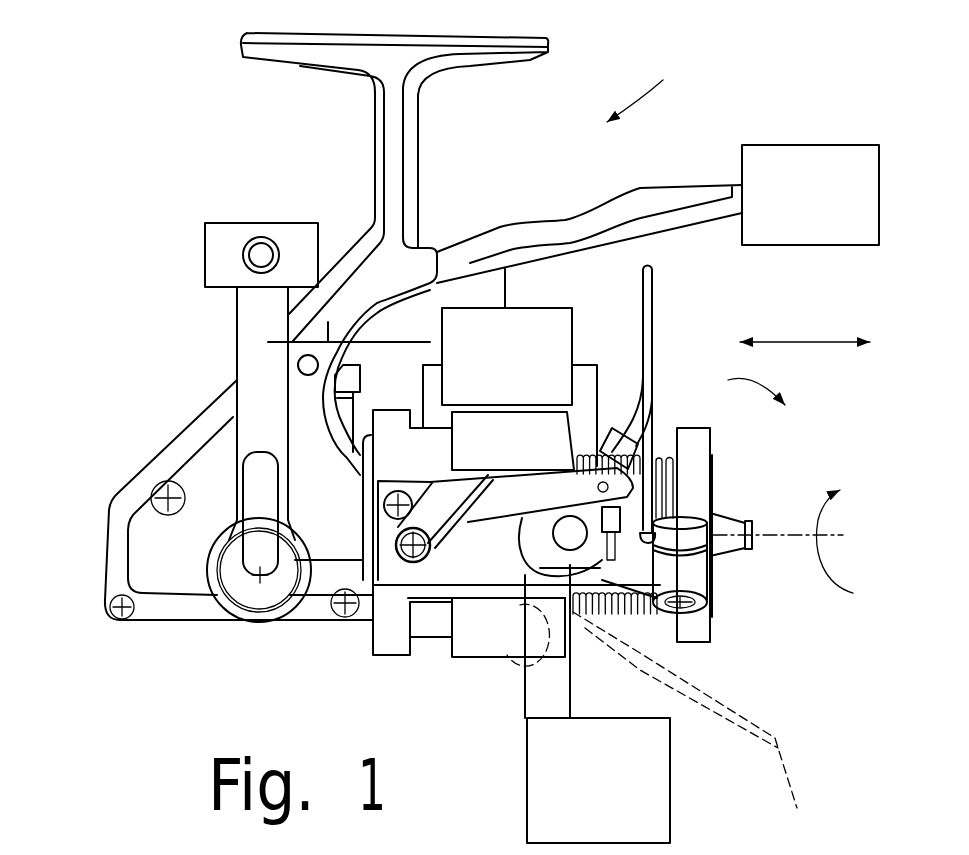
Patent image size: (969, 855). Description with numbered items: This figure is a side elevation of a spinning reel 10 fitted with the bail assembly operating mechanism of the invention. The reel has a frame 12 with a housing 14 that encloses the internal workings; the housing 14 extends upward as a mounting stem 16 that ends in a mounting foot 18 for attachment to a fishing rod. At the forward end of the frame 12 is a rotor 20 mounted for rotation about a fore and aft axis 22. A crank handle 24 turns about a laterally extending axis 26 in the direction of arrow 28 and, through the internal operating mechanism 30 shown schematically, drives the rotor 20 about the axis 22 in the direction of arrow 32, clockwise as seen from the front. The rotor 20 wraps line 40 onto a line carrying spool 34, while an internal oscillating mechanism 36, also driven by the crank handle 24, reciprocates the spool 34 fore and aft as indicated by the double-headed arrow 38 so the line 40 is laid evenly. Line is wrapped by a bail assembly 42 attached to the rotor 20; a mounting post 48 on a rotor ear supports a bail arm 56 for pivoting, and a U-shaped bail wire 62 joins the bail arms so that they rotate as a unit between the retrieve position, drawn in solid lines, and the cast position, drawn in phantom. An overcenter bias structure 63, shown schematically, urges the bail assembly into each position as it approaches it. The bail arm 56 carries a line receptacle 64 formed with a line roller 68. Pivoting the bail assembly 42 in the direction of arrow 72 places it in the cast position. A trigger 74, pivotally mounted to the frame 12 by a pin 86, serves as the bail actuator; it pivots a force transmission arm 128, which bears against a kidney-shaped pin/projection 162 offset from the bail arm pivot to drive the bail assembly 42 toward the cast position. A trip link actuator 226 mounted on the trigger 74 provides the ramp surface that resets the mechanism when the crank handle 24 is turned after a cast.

The spinning reel 10 is at (656, 77).
The frame 12 is at (182, 437).
The housing 14 is at (170, 622).
The mounting stem 16 is at (400, 200).
The mounting foot 18 is at (411, 68).
The rotor 20 is at (432, 640).
The fore and aft axis 22 is at (773, 533).
The crank handle 24 is at (247, 328).
The laterally extending axis 26 is at (260, 572).
The arrow 28 is at (312, 465).
The internal operating mechanism 30 is at (520, 399).
The arrow 32 is at (826, 575).
The line carrying spool 34 is at (477, 645).
The internal oscillating mechanism 36 is at (823, 237).
The double-headed arrow 38 is at (803, 340).
The line 40 is at (655, 455).
The bail assembly 42 is at (657, 323).
The mounting post 48 is at (568, 506).
The bail arm 56 is at (577, 617).
The U-shaped bail wire 62 is at (645, 372).
The overcenter bias structure 63 is at (597, 704).
The line receptacle 64 is at (652, 610).
The line roller 68 is at (687, 558).
The arrow 72 is at (774, 382).
The trigger 74 is at (692, 193).
The pin 86 is at (308, 375).
The force transmission arm 128 is at (520, 492).
The kidney-shaped pin/projection 162 is at (535, 568).
The trip link actuator 226 is at (357, 383).